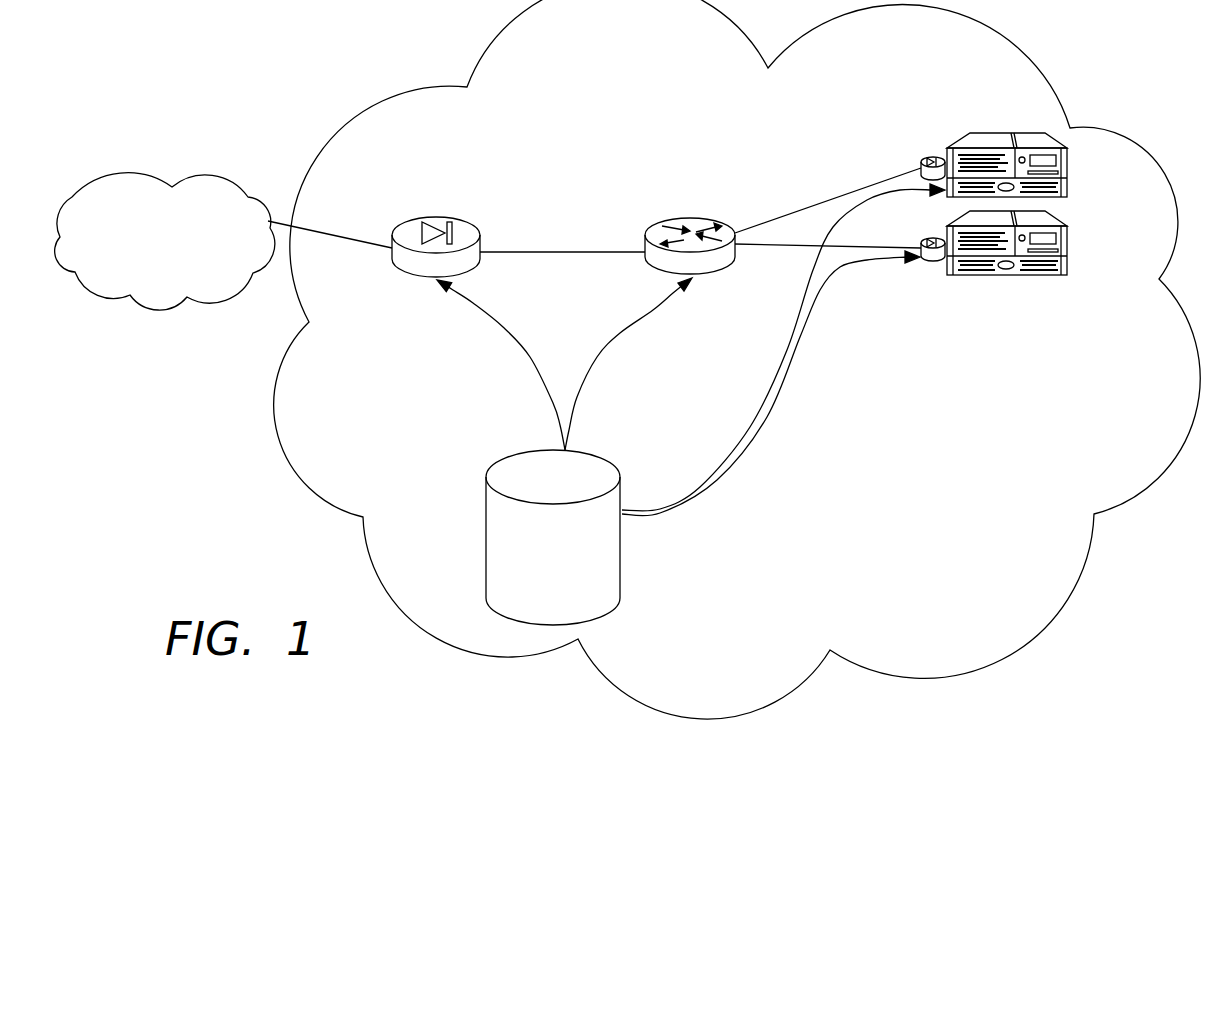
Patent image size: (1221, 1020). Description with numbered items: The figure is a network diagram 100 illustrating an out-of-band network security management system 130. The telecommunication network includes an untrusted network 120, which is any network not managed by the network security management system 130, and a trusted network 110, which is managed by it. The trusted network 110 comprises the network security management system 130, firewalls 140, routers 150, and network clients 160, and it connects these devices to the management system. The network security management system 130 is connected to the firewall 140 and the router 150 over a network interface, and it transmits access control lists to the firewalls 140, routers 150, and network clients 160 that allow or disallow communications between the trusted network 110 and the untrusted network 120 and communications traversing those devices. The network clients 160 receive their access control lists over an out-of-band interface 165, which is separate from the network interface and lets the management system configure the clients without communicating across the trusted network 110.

The network diagram 100 is at (283, 17).
The trusted network 110 is at (737, 359).
The untrusted network 120 is at (223, 241).
The network security management system 130 is at (691, 404).
The firewall 140 is at (437, 217).
The router 150 is at (660, 222).
The network client 160 is at (985, 133).
The out-of-band interface 165 is at (931, 265).